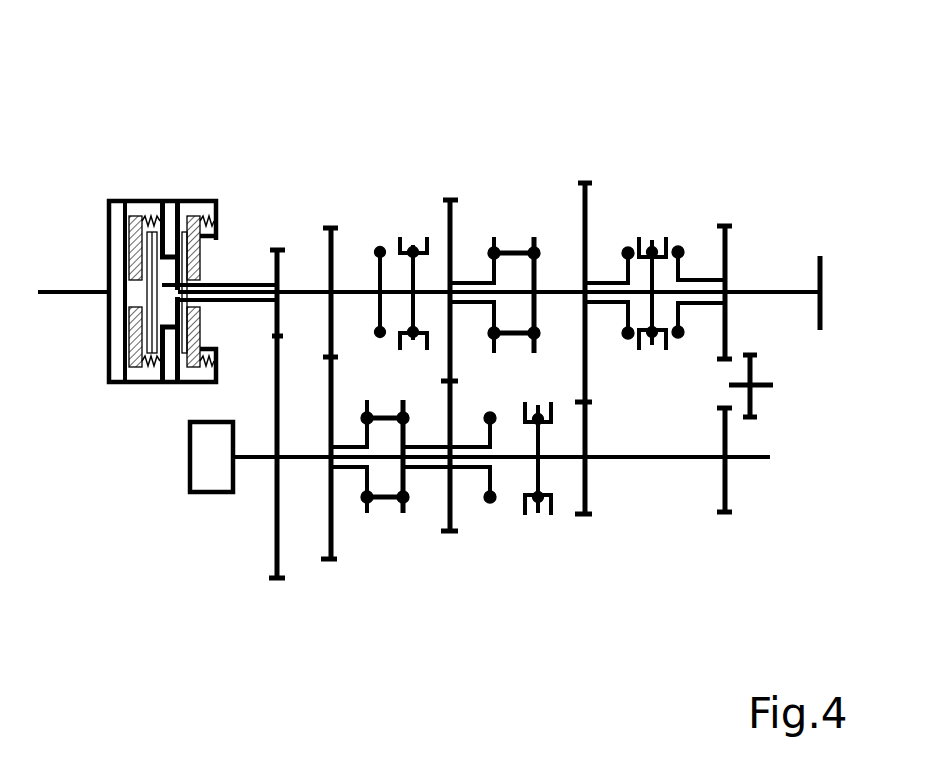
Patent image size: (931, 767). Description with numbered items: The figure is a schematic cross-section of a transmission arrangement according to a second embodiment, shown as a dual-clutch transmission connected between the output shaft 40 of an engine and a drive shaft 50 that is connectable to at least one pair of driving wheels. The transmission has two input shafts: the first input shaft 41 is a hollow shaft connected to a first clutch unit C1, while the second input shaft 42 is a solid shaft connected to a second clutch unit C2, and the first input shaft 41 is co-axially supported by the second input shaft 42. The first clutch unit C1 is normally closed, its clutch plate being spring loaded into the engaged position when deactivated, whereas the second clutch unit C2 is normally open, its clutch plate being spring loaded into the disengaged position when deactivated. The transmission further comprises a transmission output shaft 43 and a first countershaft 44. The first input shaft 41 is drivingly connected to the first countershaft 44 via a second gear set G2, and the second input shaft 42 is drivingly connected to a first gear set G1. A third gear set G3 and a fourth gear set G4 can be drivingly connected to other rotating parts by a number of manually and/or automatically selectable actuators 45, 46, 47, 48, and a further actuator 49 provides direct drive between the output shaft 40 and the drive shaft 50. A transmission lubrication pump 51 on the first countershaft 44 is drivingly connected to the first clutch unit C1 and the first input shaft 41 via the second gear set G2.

The output shaft 40 is at (75, 296).
The first input shaft 41 is at (242, 283).
The second input shaft 42 is at (167, 300).
The transmission output shaft 43 is at (555, 290).
The first countershaft 44 is at (653, 458).
The actuator 45 is at (537, 524).
The actuator 46 is at (516, 246).
The actuator 47 is at (652, 236).
The actuator 48 is at (383, 522).
The further actuator 49 is at (415, 236).
The drive shaft 50 is at (797, 296).
The transmission lubrication pump 51 is at (197, 493).
The first clutch unit C1 is at (201, 190).
The second clutch unit C2 is at (148, 190).
The first gear set G1 is at (327, 570).
The second gear set G2 is at (273, 590).
The third gear set G3 is at (447, 555).
The fourth gear set G4 is at (583, 524).